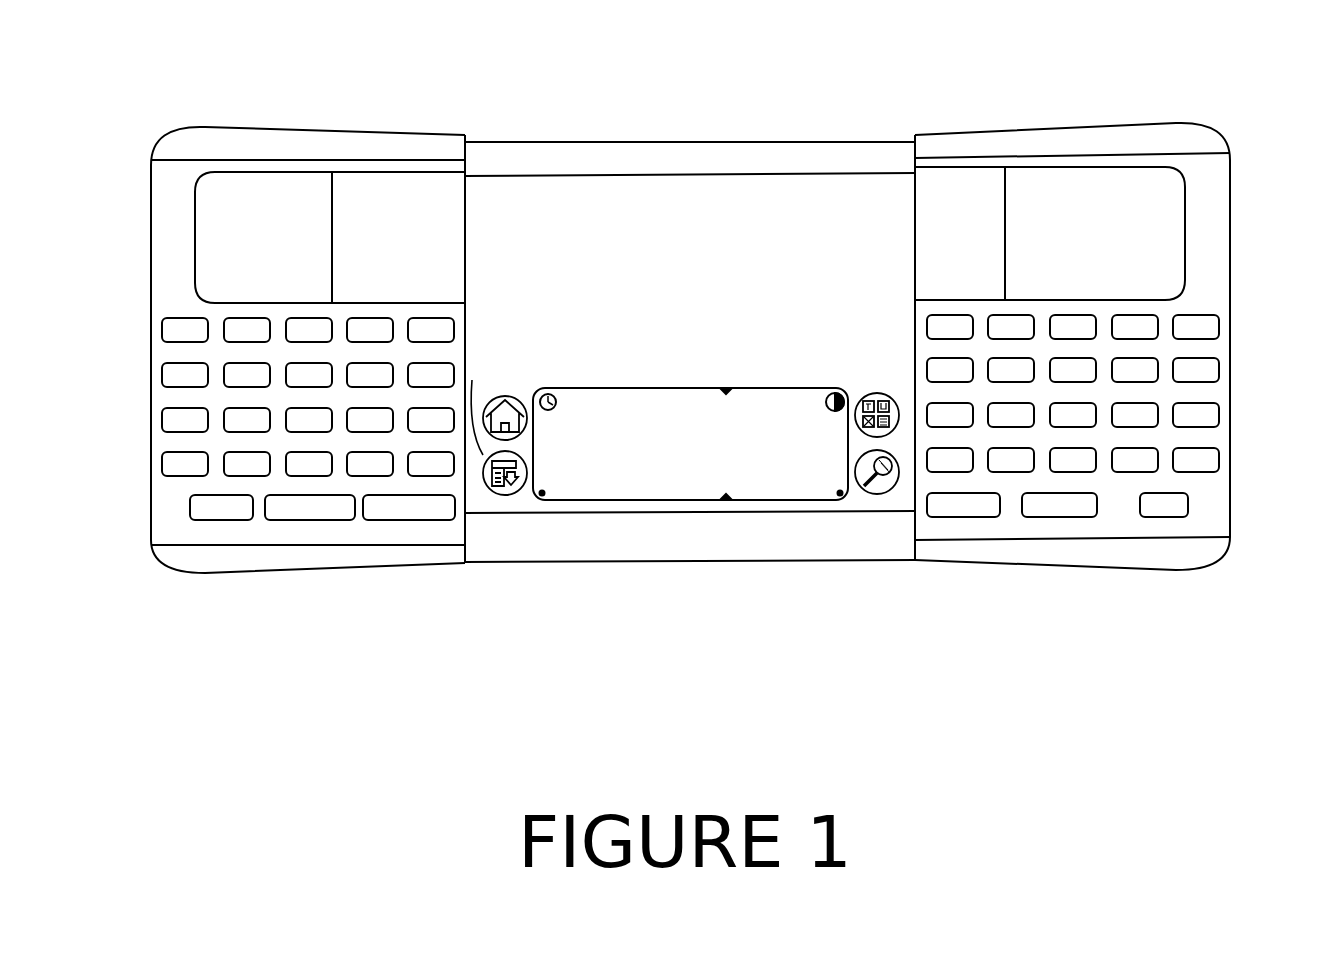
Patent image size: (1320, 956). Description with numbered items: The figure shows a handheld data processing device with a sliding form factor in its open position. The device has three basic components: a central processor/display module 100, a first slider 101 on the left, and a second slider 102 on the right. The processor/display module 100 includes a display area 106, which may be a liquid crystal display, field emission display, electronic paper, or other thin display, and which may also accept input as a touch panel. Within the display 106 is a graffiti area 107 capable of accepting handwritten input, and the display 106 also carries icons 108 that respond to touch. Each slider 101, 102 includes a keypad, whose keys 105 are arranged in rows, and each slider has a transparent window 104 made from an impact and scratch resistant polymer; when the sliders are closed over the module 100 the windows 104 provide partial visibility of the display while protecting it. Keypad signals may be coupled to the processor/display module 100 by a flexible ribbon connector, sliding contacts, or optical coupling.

The processor/display module 100 is at (748, 141).
The first slider 101 is at (283, 575).
The second slider 102 is at (1122, 570).
The transparent window 104 is at (282, 250).
The keyboard keys 105 is at (162, 328).
The display area 106 is at (718, 284).
The graffiti area 107 is at (708, 460).
The icons 108 is at (513, 396).